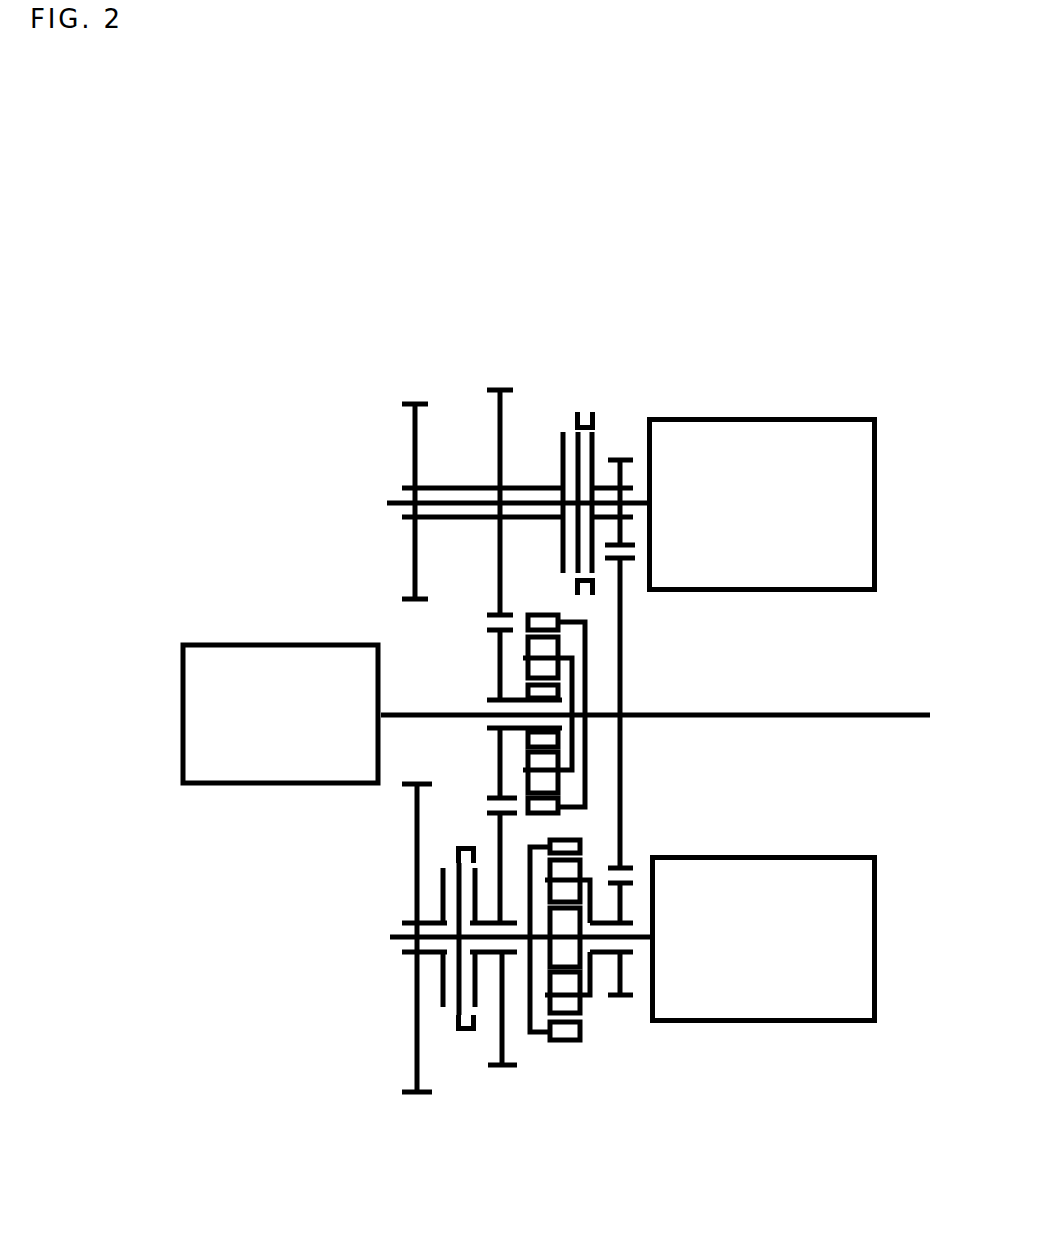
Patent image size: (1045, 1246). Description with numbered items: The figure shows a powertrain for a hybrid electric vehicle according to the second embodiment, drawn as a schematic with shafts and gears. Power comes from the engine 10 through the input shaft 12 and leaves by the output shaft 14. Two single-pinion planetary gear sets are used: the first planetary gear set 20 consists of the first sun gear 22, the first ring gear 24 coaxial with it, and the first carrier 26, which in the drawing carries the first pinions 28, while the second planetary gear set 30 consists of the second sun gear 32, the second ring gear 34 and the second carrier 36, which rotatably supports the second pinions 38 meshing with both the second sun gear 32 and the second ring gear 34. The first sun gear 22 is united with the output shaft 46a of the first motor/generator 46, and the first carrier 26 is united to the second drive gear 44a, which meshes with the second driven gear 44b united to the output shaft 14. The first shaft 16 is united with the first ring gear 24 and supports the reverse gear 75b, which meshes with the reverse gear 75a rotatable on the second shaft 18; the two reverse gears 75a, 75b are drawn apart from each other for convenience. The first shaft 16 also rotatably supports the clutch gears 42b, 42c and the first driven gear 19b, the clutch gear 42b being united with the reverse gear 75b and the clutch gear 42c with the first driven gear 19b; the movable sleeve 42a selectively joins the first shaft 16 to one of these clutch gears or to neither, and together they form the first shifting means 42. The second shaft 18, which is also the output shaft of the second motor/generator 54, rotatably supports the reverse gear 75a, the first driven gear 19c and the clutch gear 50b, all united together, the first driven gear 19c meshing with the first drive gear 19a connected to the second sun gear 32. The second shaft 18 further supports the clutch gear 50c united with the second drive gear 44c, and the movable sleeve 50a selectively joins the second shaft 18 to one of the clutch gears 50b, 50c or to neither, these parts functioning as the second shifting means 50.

The engine 10 is at (231, 642).
The input shaft 12 is at (442, 712).
The output shaft 14 is at (872, 713).
The first shaft 16 is at (392, 937).
The second shaft 18 is at (388, 501).
The first drive gear 19a is at (495, 780).
The first driven gear 19b is at (503, 1040).
The first driven gear 19c is at (495, 430).
The first planetary gear set 20 is at (641, 1033).
The first sun gear 22 is at (582, 917).
The first ring gear 24 is at (573, 1040).
The first carrier 26 is at (593, 998).
The carrier 28 is at (597, 1000).
The second planetary gear set 30 is at (668, 731).
The second sun gear 32 is at (558, 740).
The second ring gear 34 is at (560, 815).
The second carrier 36 is at (560, 657).
The second pinions 38 is at (560, 782).
The first shifting means 42 is at (417, 1038).
The movable sleeve 42a is at (460, 1025).
The clutch gear 42b is at (443, 998).
The clutch gear 42c is at (477, 1003).
The second drive gear 44a is at (627, 977).
The second driven gear 44b is at (623, 612).
The second drive gear 44c is at (628, 457).
The first motor/generator 46 is at (793, 1027).
The output shaft 46a is at (640, 935).
The second shifting means 50 is at (608, 391).
The movable sleeve 50a is at (595, 438).
The clutch gear 50b is at (562, 442).
The clutch gear 50c is at (600, 444).
The second motor/generator 54 is at (828, 417).
The reverse gear 75a is at (407, 436).
The reverse gear 75b is at (413, 852).